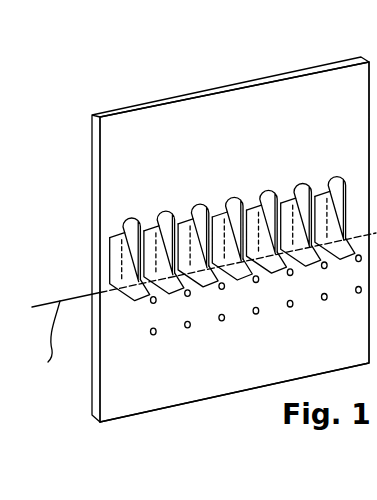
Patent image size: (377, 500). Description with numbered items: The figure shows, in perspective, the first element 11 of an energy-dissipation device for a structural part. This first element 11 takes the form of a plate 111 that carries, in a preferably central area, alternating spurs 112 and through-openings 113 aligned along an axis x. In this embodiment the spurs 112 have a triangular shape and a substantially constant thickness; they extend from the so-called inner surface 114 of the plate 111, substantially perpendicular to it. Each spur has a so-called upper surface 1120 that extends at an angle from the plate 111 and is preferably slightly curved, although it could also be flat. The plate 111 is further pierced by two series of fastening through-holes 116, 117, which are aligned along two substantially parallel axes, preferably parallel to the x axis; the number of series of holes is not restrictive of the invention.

The first element 11 is at (284, 50).
The plate 111 is at (92, 147).
The spur 112 is at (112, 271).
The through-opening 113 is at (132, 219).
The upper surface 1120 is at (253, 207).
The inner surface 114 is at (233, 356).
The fastening through-hole 116 is at (150, 301).
The through-hole 117 is at (156, 332).